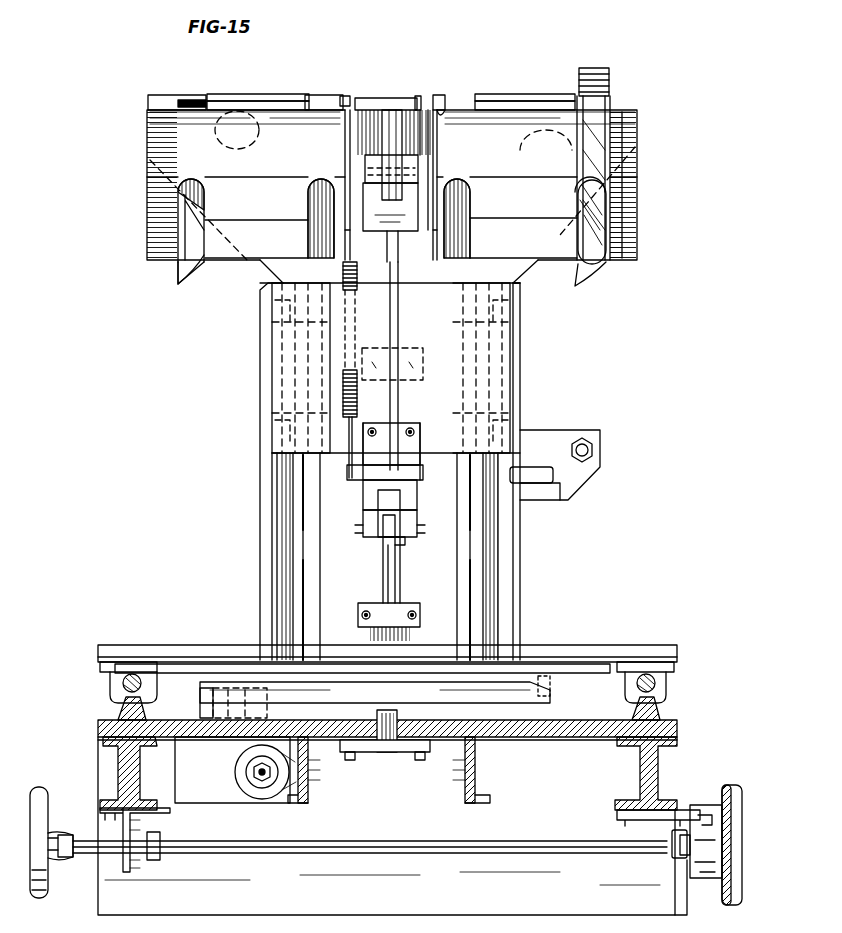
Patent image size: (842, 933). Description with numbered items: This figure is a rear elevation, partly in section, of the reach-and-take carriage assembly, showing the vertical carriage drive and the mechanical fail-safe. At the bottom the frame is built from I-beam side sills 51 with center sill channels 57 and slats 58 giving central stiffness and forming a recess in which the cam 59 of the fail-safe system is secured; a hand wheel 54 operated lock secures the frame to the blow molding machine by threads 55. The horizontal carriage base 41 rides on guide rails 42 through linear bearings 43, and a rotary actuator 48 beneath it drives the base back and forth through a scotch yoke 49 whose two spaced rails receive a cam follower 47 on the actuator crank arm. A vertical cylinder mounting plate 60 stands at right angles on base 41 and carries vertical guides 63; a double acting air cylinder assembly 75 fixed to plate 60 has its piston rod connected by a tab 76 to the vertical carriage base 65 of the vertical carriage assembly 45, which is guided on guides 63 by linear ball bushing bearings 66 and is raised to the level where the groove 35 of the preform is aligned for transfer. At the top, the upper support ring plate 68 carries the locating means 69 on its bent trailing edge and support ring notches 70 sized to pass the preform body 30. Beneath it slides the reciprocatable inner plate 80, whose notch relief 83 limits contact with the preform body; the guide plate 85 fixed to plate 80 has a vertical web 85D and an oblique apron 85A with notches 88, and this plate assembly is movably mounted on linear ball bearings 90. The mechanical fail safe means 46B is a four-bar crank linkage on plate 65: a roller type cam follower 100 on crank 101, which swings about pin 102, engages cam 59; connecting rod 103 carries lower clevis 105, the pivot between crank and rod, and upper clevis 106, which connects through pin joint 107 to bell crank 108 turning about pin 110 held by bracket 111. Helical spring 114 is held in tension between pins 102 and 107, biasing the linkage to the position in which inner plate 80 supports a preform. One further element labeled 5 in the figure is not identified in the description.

The column 5 is at (618, 138).
The preform body 30 is at (612, 198).
The groove 35 is at (597, 62).
The horizontal carriage base 41 is at (186, 645).
The guide rails 42 is at (132, 674).
The linear bearings 43 is at (110, 678).
The vertical carriage assembly 45 is at (254, 377).
The mechanical fail safe means 46B is at (425, 385).
The cam follower 47 is at (543, 665).
The rotary actuator 48 is at (250, 775).
The scotch yoke 49 is at (452, 700).
The I-beam side sills 51 is at (122, 768).
The hand wheel 54 is at (40, 787).
The threads 55 is at (712, 870).
The center sill channels 57 is at (440, 798).
The slats 58 is at (170, 722).
The cam 59 is at (385, 710).
The vertical cylinder mounting plate 60 is at (260, 468).
The vertical guides 63 is at (293, 568).
The vertical carriage base 65 is at (272, 353).
The linear ball bushing bearings 66 is at (272, 306).
The upper support ring plate 68 is at (282, 95).
The locating means 69 is at (520, 95).
The support ring notches 70 is at (206, 98).
The double acting air cylinder assembly 75 is at (383, 580).
The tab 76 is at (378, 97).
The inner plate 80 is at (419, 98).
The undercut or relief 83 is at (444, 105).
The guide plate 85 is at (146, 207).
The apron 85A is at (181, 262).
The vertical web 85D is at (146, 156).
The notches 88 is at (306, 193).
The linear ball bearings 90 is at (212, 150).
The roller type cam follower 100 is at (400, 540).
The crank 101 is at (372, 500).
The pin or axle 102 is at (432, 445).
The connecting rod 103 is at (399, 318).
The lower clevis 105 is at (365, 512).
The upper clevis 106 is at (430, 185).
The pin joint 107 is at (370, 168).
The bell crank 108 is at (382, 145).
The pin 110 is at (425, 150).
The bracket 111 is at (440, 170).
The helical spring 114 is at (357, 280).